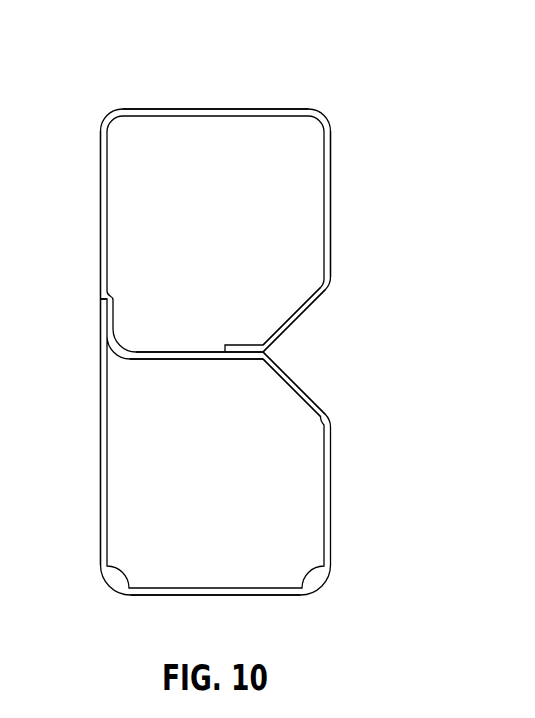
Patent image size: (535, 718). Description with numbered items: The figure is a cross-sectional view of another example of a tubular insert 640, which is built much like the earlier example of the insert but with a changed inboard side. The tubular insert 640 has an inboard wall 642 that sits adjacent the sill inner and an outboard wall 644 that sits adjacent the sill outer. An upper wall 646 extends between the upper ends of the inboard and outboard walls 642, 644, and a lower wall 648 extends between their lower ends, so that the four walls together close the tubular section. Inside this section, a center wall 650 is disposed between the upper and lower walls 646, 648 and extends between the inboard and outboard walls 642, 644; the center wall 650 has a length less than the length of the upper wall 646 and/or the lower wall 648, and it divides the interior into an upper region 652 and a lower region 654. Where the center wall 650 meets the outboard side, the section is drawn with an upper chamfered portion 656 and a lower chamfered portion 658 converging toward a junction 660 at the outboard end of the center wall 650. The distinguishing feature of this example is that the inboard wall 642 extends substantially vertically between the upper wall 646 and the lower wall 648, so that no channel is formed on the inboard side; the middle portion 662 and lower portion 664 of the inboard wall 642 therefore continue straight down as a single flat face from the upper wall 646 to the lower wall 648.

The tubular insert 640 is at (332, 85).
The inboard wall 642 is at (100, 192).
The outboard wall 644 is at (330, 165).
The upper wall 646 is at (231, 109).
The lower wall 648 is at (223, 595).
The center wall 650 is at (195, 360).
The first compartment 652 is at (232, 247).
The second compartment 654 is at (232, 505).
The first chamfered wall 656 is at (317, 307).
The second chamfered wall 658 is at (317, 395).
The junction 660 is at (340, 365).
The side wall middle portion 662 is at (100, 362).
The side wall lower portion 664 is at (100, 495).